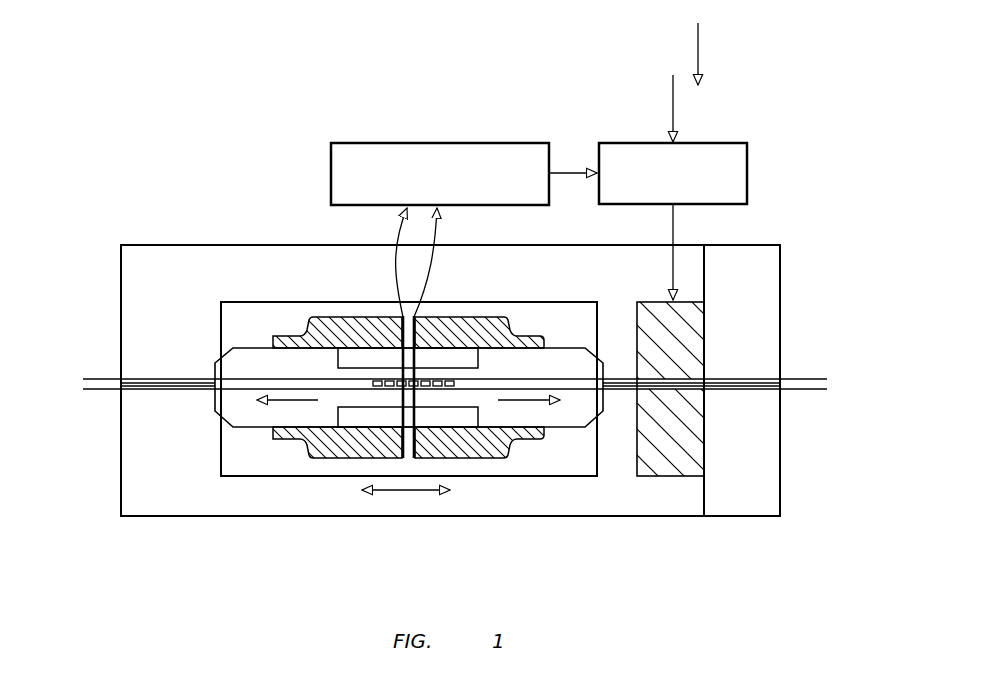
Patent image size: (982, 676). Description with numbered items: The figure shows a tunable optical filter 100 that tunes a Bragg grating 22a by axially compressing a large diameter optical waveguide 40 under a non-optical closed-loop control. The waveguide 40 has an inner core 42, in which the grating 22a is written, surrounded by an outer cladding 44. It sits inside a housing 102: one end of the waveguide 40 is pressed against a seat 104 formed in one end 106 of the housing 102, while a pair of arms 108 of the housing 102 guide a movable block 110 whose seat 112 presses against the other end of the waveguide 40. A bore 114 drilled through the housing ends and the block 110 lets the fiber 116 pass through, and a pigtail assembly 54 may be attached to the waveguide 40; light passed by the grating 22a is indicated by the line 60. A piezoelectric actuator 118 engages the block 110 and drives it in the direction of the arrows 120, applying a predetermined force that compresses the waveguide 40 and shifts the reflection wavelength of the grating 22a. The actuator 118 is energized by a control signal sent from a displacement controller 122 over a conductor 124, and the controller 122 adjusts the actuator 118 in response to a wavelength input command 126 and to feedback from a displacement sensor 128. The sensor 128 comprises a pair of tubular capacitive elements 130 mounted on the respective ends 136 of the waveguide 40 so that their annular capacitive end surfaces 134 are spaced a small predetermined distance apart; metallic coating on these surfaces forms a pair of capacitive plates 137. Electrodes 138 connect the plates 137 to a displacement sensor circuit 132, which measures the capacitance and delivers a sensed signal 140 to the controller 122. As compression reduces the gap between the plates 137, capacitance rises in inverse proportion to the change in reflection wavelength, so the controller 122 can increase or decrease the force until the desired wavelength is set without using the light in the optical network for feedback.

The tunable optical filter 100 is at (257, 112).
The housing 102 is at (183, 243).
The seat 104 is at (217, 358).
The end of housing 106 is at (133, 320).
The arms 108 is at (650, 272).
The movable block 110 is at (623, 312).
The seat of block 112 is at (597, 347).
The bore 114 is at (155, 392).
The fiber 116 is at (120, 380).
The actuator 118 is at (703, 362).
The arrows 120 is at (397, 490).
The controller 122 is at (737, 142).
The conductor 124 is at (673, 235).
The input command 126 is at (698, 37).
The displacement sensor 128 is at (470, 310).
The capacitive elements 130 is at (333, 317).
The displacement sensor circuit 132 is at (383, 142).
The capacitive end surface 134 is at (397, 355).
The ends of waveguide 136 is at (288, 432).
The capacitive plates 137 is at (415, 320).
The electrodes 138 is at (398, 228).
The sensed signal 140 is at (572, 170).
The Bragg grating 22a is at (460, 456).
The large diameter optical waveguide 40 is at (237, 340).
The inner core 42 is at (265, 380).
The outer cladding 44 is at (238, 412).
The pigtail assembly 54 is at (112, 390).
The transmitted light 60 is at (533, 400).